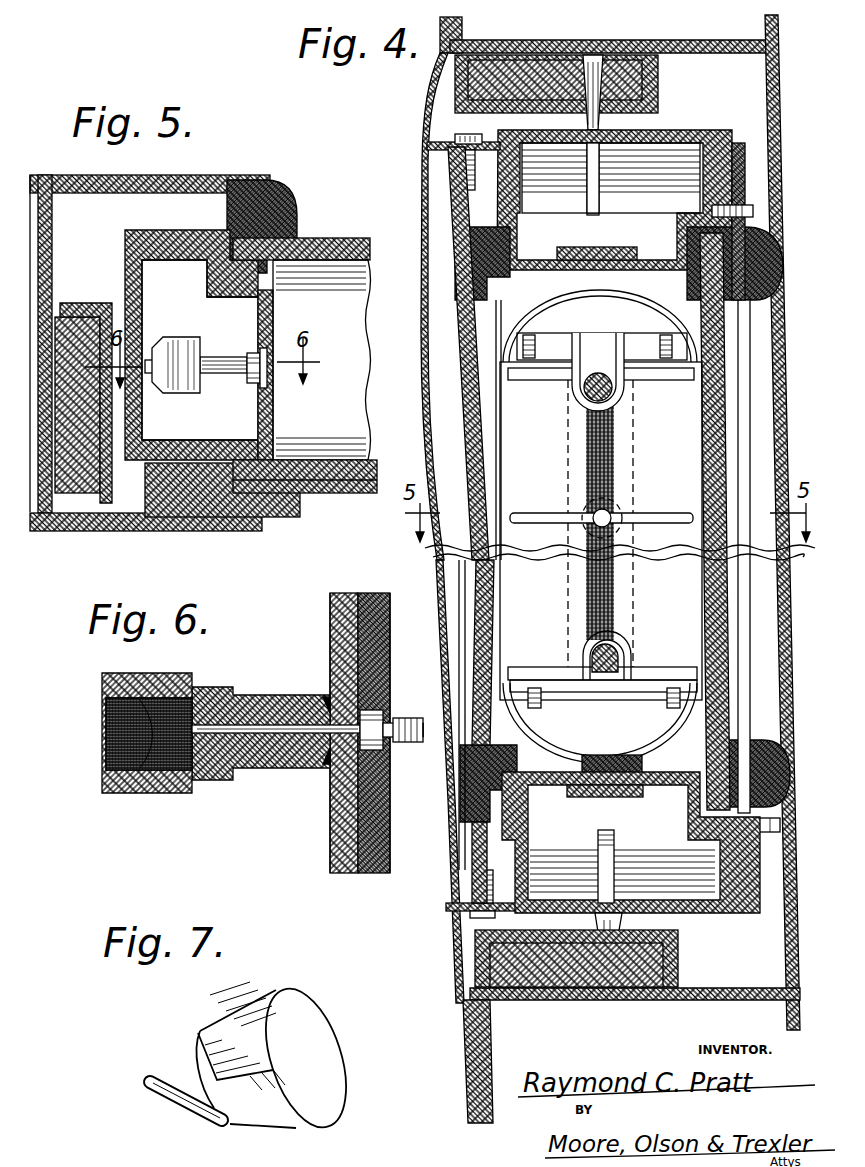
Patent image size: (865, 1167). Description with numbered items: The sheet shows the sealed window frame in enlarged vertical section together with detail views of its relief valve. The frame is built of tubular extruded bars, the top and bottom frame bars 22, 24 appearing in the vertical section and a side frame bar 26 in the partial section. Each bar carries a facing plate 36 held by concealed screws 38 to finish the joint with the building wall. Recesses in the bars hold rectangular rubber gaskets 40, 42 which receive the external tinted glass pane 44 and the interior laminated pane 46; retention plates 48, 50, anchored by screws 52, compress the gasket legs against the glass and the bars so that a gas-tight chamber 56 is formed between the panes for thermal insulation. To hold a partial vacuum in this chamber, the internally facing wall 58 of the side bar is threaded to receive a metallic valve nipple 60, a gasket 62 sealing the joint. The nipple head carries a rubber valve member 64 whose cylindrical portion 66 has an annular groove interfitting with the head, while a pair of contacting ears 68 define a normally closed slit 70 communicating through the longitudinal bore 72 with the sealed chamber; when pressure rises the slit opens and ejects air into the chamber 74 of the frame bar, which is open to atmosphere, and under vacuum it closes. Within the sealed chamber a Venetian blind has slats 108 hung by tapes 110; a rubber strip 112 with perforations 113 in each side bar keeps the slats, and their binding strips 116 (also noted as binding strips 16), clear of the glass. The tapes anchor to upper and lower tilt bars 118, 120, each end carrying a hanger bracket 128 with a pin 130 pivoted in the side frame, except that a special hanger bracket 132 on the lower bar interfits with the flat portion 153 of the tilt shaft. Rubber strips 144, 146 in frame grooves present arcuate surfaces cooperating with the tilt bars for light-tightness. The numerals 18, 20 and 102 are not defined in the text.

In FIG. 4, the binding strips 16 is at (466, 1058).
In FIG. 4, the upper end block 18 is at (656, 76).
In FIG. 4, the annular ring 20 is at (735, 298).
In FIG. 5, the annular ring 20 is at (265, 190).
In FIG. 4, the top frame bar 22 is at (675, 130).
In FIG. 4, the bottom frame bar 24 is at (700, 900).
In FIG. 5, the side frame bar 26 is at (125, 270).
In FIG. 4, the facing plate 36 is at (440, 115).
In FIG. 5, the facing plate 36 is at (215, 538).
In FIG. 4, the screws 38 is at (458, 135).
In FIG. 4, the gasket 40 is at (741, 320).
In FIG. 4, the gasket 42 is at (468, 315).
In FIG. 4, the glass pane 44 is at (718, 420).
In FIG. 5, the glass pane 44 is at (327, 240).
In FIG. 4, the glass pane 46 is at (487, 445).
In FIG. 5, the glass pane 46 is at (333, 493).
In FIG. 4, the retention plate 48 is at (740, 143).
In FIG. 4, the retention plate 50 is at (465, 170).
In FIG. 4, the screws 52 is at (755, 207).
In FIG. 4, the chamber 56 is at (533, 306).
In FIG. 5, the internally facing wall 58 is at (275, 425).
In FIG. 6, the internally facing wall 58 is at (346, 833).
In FIG. 5, the valve nipple 60 is at (214, 355).
In FIG. 6, the valve nipple 60 is at (240, 692).
In FIG. 6, the gasket 62 is at (320, 694).
In FIG. 5, the valve member 64 is at (183, 341).
In FIG. 6, the valve member 64 is at (165, 794).
In FIG. 7, the valve member 64 is at (192, 1032).
In FIG. 7, the cylindrical portion 66 is at (320, 1065).
In FIG. 7, the ears 68 is at (210, 1112).
In FIG. 7, the slit 70 is at (158, 1097).
In FIG. 6, the longitudinal bore 72 is at (262, 738).
In FIG. 5, the chamber 74 is at (195, 431).
In FIG. 4, the coil 102 is at (583, 209).
In FIG. 4, the slats 108 is at (545, 508).
In FIG. 5, the slats 108 is at (363, 390).
In FIG. 6, the slats 108 is at (425, 740).
In FIG. 4, the tapes 110 is at (700, 578).
In FIG. 5, the rubber strip 112 is at (268, 386).
In FIG. 6, the rubber strip 112 is at (386, 603).
In FIG. 5, the perforations 113 is at (268, 374).
In FIG. 4, the binding strips 116 is at (680, 512).
In FIG. 4, the upper tilt bar 118 is at (690, 307).
In FIG. 4, the lower tilt bar 120 is at (510, 742).
In FIG. 4, the hanger bracket 128 is at (590, 388).
In FIG. 4, the pin 130 is at (605, 393).
In FIG. 4, the hanger bracket 132 is at (622, 655).
In FIG. 4, the rubber strip 144 is at (600, 246).
In FIG. 4, the rubber strip 146 is at (607, 770).
In FIG. 4, the flat portion 153 is at (586, 650).